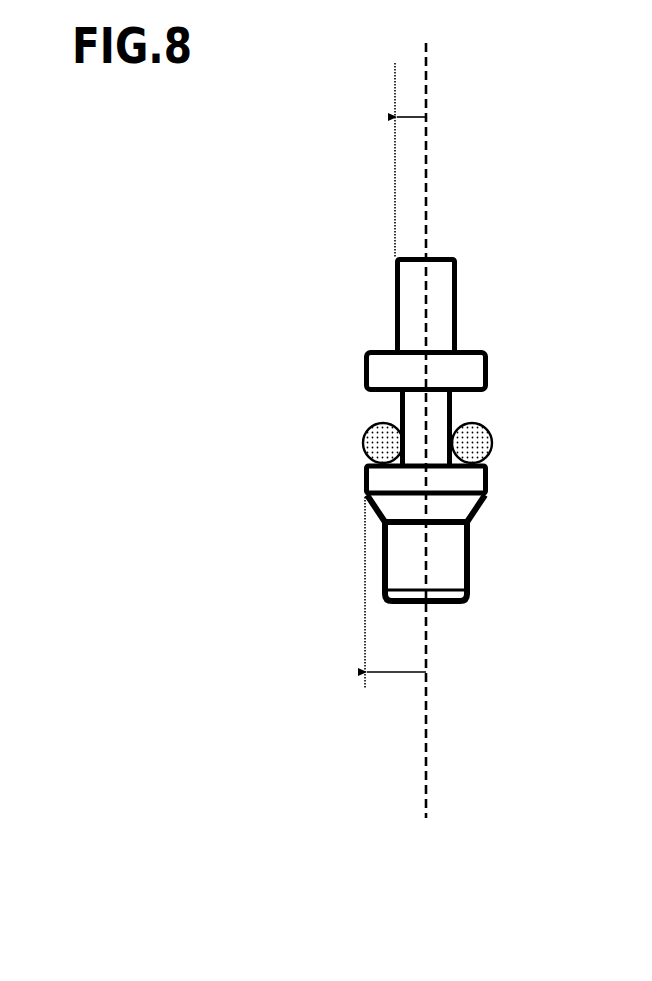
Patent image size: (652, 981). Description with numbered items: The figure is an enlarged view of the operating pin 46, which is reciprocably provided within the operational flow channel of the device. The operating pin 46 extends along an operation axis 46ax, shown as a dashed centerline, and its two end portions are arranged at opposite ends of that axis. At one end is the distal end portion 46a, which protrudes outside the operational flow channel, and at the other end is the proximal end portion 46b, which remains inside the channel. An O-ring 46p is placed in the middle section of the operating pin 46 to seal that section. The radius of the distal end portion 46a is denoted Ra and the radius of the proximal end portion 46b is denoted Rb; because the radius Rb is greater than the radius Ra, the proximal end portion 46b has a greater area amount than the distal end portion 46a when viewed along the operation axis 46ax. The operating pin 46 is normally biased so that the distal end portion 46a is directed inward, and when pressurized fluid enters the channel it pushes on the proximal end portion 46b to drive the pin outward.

The operating pin 46 is at (485, 429).
The distal end portion 46a is at (478, 258).
The proximal end portion 46b is at (502, 497).
The O-ring 46p is at (360, 448).
The operation axis 46ax is at (426, 808).
The radius of the distal end portion Ra is at (390, 160).
The radius of the proximal end portion Rb is at (373, 605).